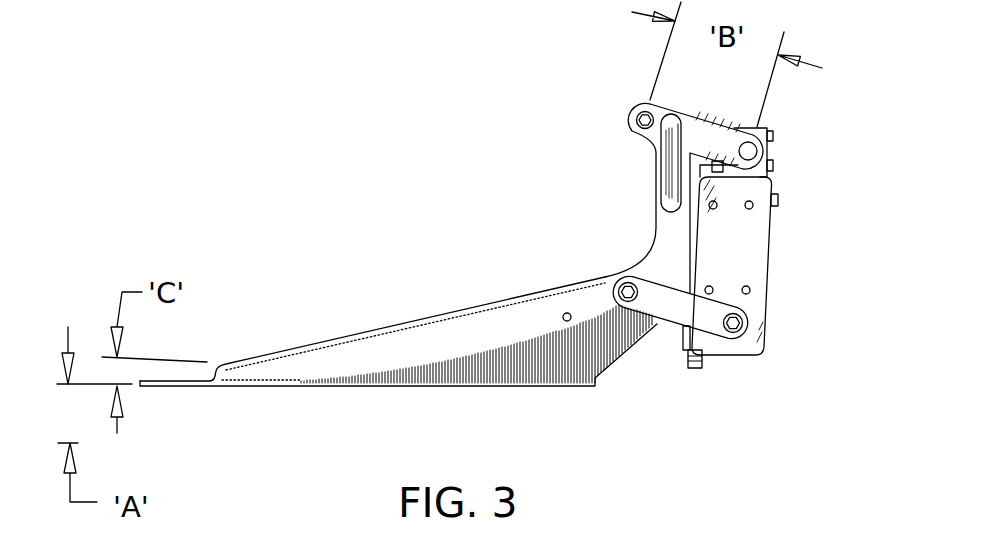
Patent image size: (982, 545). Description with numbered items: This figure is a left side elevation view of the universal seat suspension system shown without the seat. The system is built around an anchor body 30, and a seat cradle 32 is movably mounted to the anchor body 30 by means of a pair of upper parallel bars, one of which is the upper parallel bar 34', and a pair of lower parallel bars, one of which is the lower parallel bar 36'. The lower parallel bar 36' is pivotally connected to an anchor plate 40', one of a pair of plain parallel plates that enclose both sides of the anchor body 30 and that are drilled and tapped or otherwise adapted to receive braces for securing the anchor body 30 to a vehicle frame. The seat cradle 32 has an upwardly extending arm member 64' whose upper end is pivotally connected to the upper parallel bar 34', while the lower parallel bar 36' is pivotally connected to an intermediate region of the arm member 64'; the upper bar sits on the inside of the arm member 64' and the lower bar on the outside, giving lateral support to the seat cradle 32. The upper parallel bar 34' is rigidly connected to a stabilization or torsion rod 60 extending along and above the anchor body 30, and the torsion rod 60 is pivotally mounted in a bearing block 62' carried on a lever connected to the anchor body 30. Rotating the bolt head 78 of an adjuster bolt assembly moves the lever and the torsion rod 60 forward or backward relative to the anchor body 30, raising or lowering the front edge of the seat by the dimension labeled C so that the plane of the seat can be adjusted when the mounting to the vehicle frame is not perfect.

The anchor body 30 is at (482, 255).
The seat cradle 32 is at (345, 357).
The upper parallel bar 34' is at (680, 165).
The lower parallel bar 36' is at (680, 344).
The anchor plate 40' is at (757, 266).
The stabilization or torsion rod 60 is at (768, 147).
The bearing block 62' is at (780, 118).
The arm member 64' is at (627, 167).
The bolt head 78 is at (777, 207).